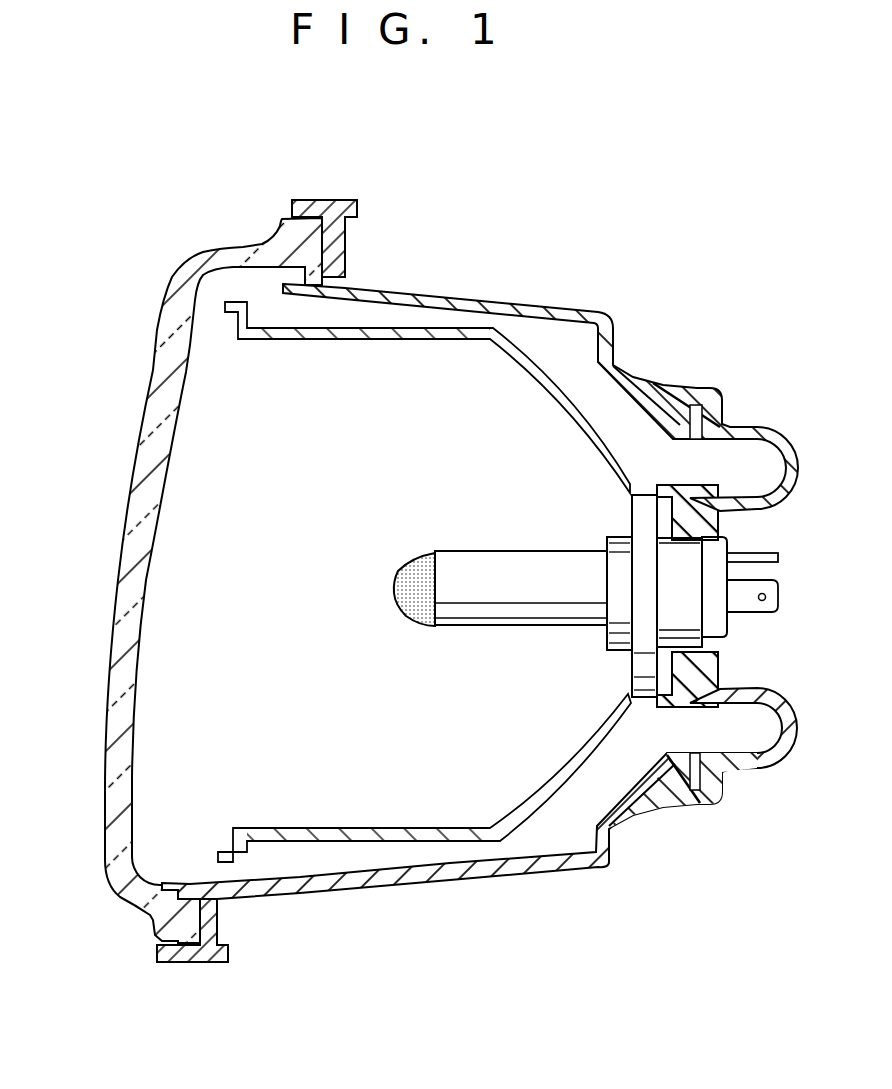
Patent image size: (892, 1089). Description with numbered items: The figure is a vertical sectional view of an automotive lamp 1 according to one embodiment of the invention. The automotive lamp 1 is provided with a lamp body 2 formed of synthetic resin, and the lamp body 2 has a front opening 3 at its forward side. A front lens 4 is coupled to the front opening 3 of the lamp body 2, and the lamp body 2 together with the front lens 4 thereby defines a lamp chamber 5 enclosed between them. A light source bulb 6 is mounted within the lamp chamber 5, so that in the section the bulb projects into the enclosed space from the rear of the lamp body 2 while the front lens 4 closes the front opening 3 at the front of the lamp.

The automotive lamp 1 is at (484, 247).
The lamp body 2 is at (563, 306).
The front opening 3 is at (430, 857).
The front lens 4 is at (140, 447).
The lamp chamber 5 is at (218, 612).
The light source bulb 6 is at (508, 550).